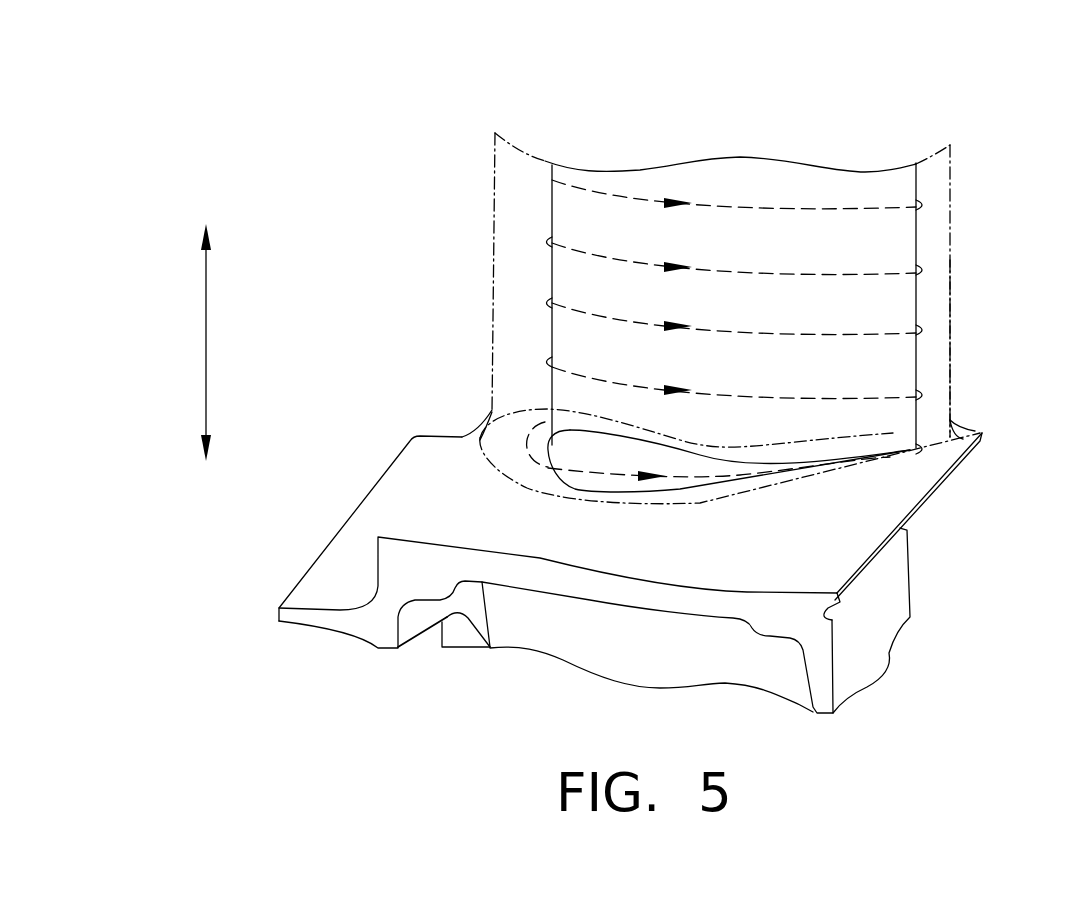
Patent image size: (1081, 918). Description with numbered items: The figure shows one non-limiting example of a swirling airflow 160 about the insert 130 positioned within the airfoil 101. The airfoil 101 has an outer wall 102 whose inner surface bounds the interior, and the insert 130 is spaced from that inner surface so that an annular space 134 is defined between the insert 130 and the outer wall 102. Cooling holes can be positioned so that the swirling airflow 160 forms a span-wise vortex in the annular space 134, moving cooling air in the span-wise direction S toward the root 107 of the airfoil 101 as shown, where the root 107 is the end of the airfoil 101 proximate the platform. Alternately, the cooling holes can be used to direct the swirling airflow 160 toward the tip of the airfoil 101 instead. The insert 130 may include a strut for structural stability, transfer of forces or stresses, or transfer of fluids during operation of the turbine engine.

The airfoil 101 is at (462, 137).
The insert 130 is at (896, 193).
The swirling airflow 160 is at (549, 178).
The annular space 134 is at (512, 248).
The outer wall 102 is at (952, 267).
The root 107 is at (502, 410).
The span-wise direction S is at (207, 333).